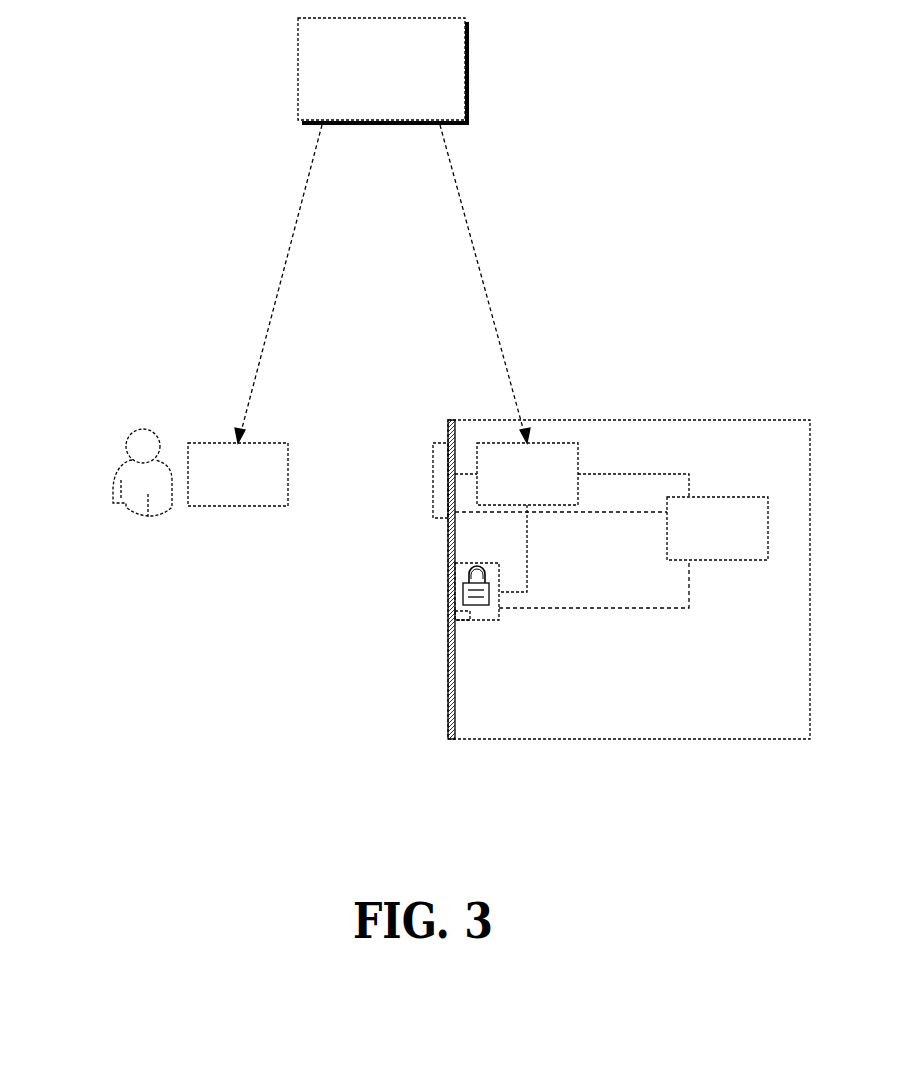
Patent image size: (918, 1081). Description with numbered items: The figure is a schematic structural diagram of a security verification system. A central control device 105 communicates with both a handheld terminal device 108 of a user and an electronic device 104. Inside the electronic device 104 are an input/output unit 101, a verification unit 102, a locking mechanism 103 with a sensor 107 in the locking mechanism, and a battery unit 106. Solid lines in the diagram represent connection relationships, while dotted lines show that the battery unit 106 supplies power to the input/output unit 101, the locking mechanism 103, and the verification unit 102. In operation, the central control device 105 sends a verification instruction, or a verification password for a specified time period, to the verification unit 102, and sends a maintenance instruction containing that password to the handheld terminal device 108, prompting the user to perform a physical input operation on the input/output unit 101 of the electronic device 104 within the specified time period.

The input/output unit 101 is at (432, 452).
The verification unit 102 is at (578, 463).
The locking mechanism 103 is at (490, 620).
The electronic device 104 is at (778, 400).
The central control device 105 is at (465, 70).
The battery unit 106 is at (725, 560).
The sensor in a locking mechanism 107 is at (463, 620).
The handheld terminal device of a user 108 is at (238, 507).